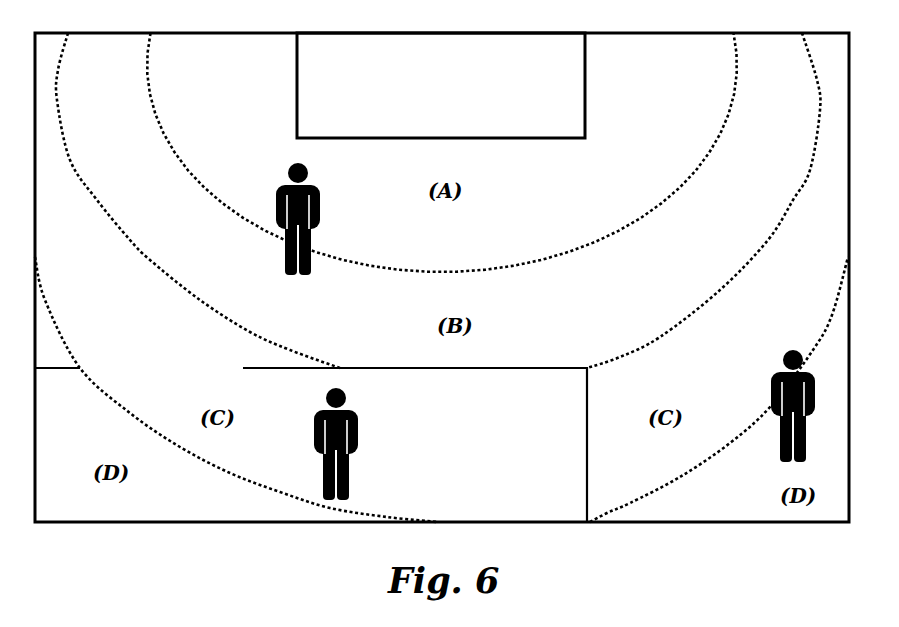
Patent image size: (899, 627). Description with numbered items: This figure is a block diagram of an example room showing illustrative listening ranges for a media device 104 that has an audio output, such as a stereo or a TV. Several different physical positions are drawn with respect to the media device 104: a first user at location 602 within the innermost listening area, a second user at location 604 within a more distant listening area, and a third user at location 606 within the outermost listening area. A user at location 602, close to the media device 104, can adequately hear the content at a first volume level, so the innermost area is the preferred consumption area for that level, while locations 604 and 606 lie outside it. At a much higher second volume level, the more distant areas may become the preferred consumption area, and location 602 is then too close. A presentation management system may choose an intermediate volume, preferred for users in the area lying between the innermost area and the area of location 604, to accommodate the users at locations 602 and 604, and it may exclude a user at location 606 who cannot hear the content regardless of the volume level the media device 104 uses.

The media device 104 is at (587, 82).
The user location 602 is at (292, 166).
The user location 604 is at (358, 412).
The user location 606 is at (775, 392).